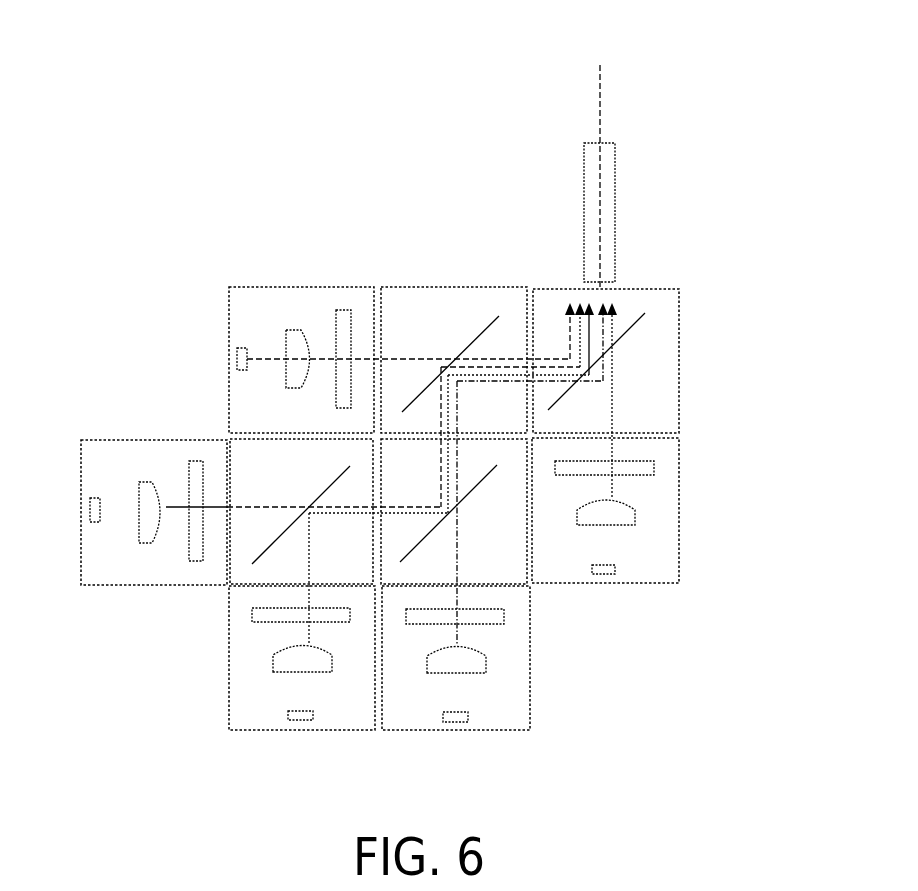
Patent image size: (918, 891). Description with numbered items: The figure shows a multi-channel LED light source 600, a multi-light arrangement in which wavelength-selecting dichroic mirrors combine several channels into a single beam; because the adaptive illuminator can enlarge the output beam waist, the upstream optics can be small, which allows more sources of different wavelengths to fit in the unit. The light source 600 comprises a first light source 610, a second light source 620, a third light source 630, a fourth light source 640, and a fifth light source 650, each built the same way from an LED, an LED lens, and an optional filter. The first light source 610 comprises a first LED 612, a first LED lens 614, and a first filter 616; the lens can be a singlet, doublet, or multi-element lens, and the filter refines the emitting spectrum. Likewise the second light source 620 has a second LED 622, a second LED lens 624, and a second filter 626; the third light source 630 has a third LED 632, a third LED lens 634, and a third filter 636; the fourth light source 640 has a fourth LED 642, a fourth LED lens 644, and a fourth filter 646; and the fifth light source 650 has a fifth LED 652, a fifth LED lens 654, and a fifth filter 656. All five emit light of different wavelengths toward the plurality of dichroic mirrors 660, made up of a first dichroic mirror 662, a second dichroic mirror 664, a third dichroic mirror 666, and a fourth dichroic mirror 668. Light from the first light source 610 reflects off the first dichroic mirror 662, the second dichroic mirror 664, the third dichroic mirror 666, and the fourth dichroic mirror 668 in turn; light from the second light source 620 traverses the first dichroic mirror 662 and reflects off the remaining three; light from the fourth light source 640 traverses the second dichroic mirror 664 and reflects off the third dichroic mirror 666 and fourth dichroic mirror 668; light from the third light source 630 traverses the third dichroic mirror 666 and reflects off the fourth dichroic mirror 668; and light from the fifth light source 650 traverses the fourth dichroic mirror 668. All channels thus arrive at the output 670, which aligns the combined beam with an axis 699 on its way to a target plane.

The multi-channel LED light source 600 is at (722, 138).
The first light source 610 is at (229, 695).
The first LED 612 is at (313, 712).
The first LED lens 614 is at (273, 672).
The first filter 616 is at (252, 608).
The second light source 620 is at (81, 440).
The second LED 622 is at (90, 498).
The second LED lens 624 is at (140, 482).
The second filter 626 is at (189, 461).
The third light source 630 is at (229, 287).
The third LED 632 is at (238, 349).
The third LED lens 634 is at (287, 330).
The third filter 636 is at (336, 330).
The fourth light source 640 is at (530, 700).
The fourth LED 642 is at (446, 722).
The fourth LED lens 644 is at (428, 674).
The fourth filter 646 is at (428, 625).
The fifth light source 650 is at (680, 522).
The fifth LED 652 is at (594, 575).
The fifth LED lens 654 is at (580, 525).
The fifth filter 656 is at (578, 476).
The plurality of dichroic mirrors 660 is at (684, 286).
The first dichroic mirror 662 is at (323, 490).
The second dichroic mirror 664 is at (491, 468).
The third dichroic mirror 666 is at (475, 340).
The fourth dichroic mirror 668 is at (643, 320).
The output 670 is at (584, 144).
The axis 699 is at (600, 65).